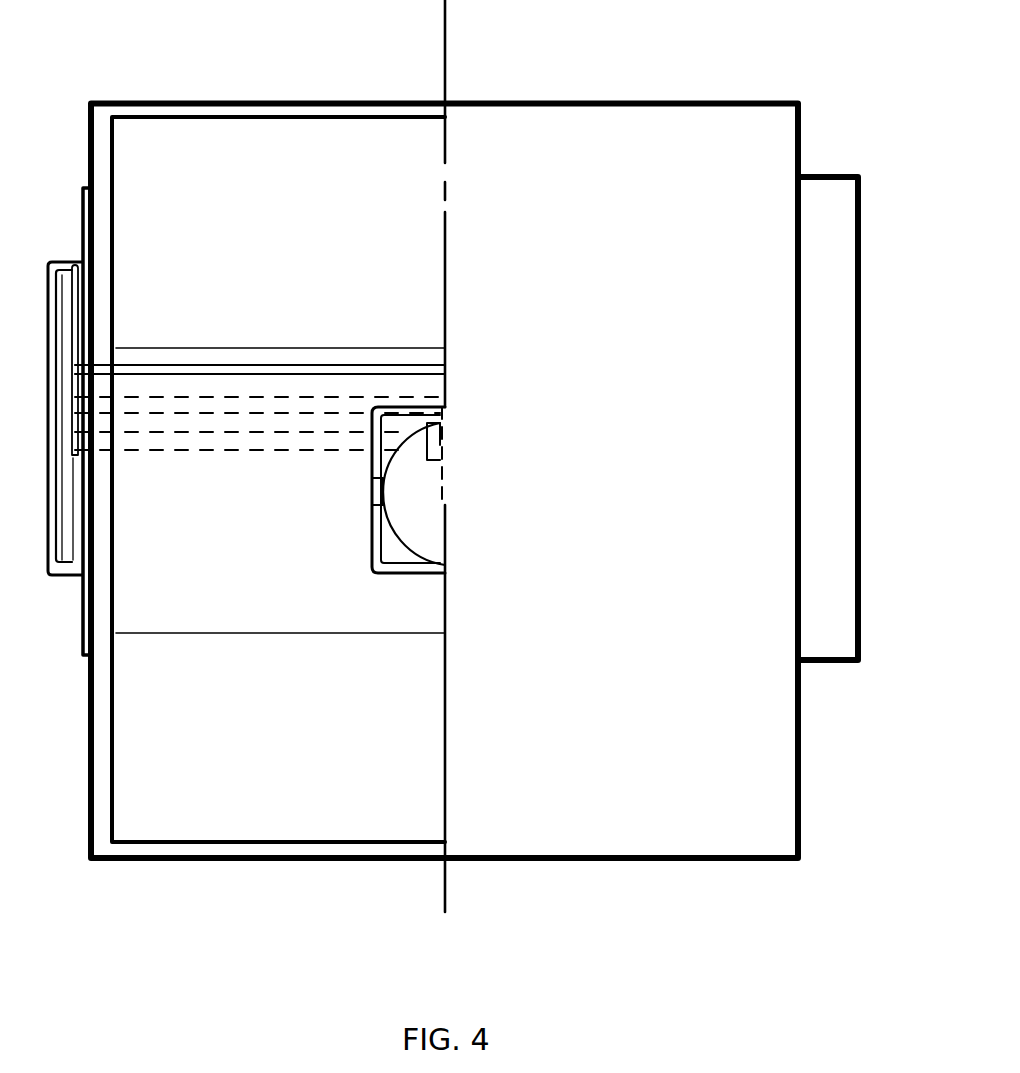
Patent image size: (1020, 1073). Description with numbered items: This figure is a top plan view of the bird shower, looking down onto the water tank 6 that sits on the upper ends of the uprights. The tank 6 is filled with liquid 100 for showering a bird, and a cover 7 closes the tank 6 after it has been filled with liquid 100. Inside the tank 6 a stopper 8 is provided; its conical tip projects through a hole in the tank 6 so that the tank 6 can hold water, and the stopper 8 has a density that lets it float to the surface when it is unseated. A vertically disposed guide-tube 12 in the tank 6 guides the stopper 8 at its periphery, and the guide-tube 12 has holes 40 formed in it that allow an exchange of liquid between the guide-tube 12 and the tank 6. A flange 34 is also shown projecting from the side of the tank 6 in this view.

The water tank 6 is at (570, 100).
The cover 7 is at (560, 673).
The stopper 8 is at (415, 546).
The guide-tube 12 is at (372, 547).
The flange 34 is at (860, 330).
The holes 40 is at (373, 490).
The liquid 100 is at (207, 773).